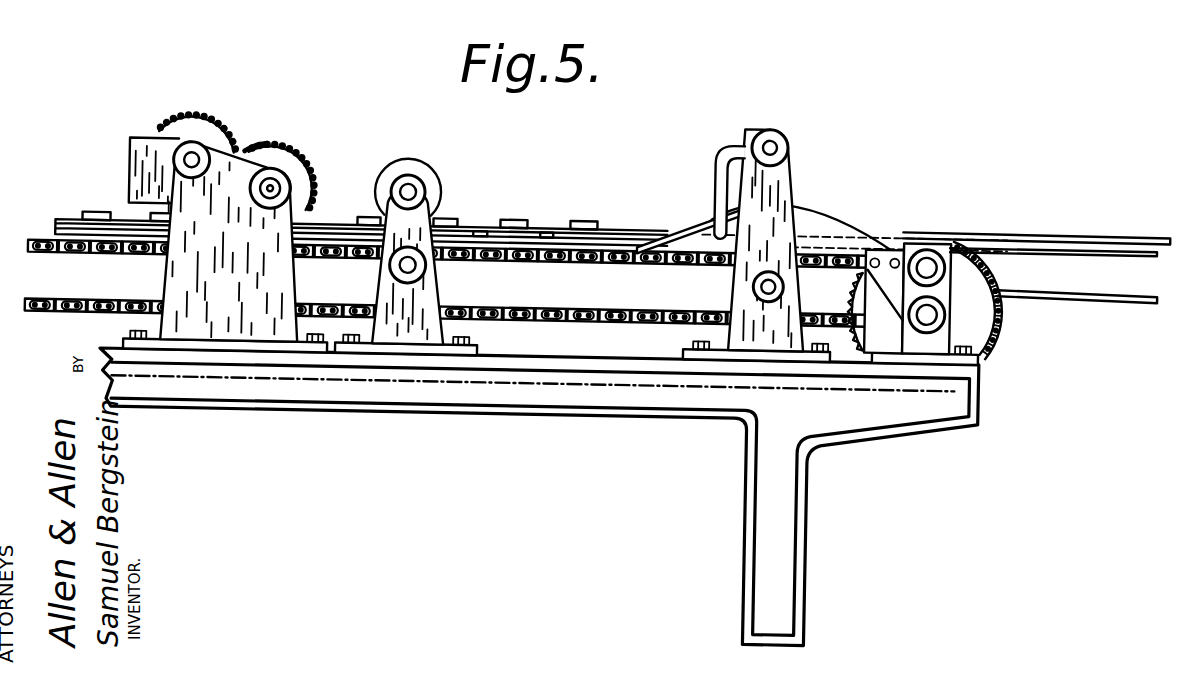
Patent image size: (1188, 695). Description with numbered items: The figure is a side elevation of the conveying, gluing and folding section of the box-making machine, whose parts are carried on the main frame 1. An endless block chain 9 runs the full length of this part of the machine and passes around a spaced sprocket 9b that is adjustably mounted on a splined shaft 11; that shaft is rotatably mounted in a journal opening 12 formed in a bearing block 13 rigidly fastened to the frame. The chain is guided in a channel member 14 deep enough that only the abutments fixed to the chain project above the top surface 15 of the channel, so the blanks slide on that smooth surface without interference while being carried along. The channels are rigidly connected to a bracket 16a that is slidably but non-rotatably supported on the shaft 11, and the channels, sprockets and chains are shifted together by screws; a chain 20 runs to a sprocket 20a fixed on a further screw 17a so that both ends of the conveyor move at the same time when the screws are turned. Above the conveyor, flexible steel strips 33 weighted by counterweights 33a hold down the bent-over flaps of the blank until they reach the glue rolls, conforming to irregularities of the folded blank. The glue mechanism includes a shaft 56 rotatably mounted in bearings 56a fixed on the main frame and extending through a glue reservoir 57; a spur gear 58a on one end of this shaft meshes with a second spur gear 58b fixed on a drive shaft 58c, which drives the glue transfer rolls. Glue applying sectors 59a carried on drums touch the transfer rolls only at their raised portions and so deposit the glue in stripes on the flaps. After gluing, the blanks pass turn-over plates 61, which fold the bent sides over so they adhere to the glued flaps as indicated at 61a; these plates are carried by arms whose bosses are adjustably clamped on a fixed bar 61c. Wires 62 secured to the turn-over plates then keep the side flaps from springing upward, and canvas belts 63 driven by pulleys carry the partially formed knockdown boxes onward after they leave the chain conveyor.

The frame 1 is at (497, 405).
The endless block chain 9 is at (1000, 342).
The sprocket 9b is at (975, 323).
The splined shaft 11 is at (925, 333).
The journal opening 12 is at (941, 334).
The bearing block 13 is at (946, 352).
The channel member 14 is at (84, 213).
The top surface of channel 15 is at (114, 213).
The bracket 16a is at (903, 245).
The screw 17a is at (768, 288).
The chain 20 is at (470, 260).
The sprocket 20a is at (800, 308).
The flexible steel strip 33 is at (468, 222).
The counterweight 33a is at (515, 224).
The shaft 56 is at (193, 158).
The bearing 56a is at (183, 116).
The glue reservoir 57 is at (136, 137).
The spur gear 58a is at (233, 139).
The spur gear 58b is at (298, 152).
The shaft 58c is at (271, 187).
The glue applying sector 59a is at (283, 146).
The turn-over plate 61 is at (812, 208).
The adhered side portion 61a is at (714, 177).
The fixed bar 61c is at (772, 147).
The wire 62 is at (1028, 232).
The canvas belt 63 is at (1068, 250).